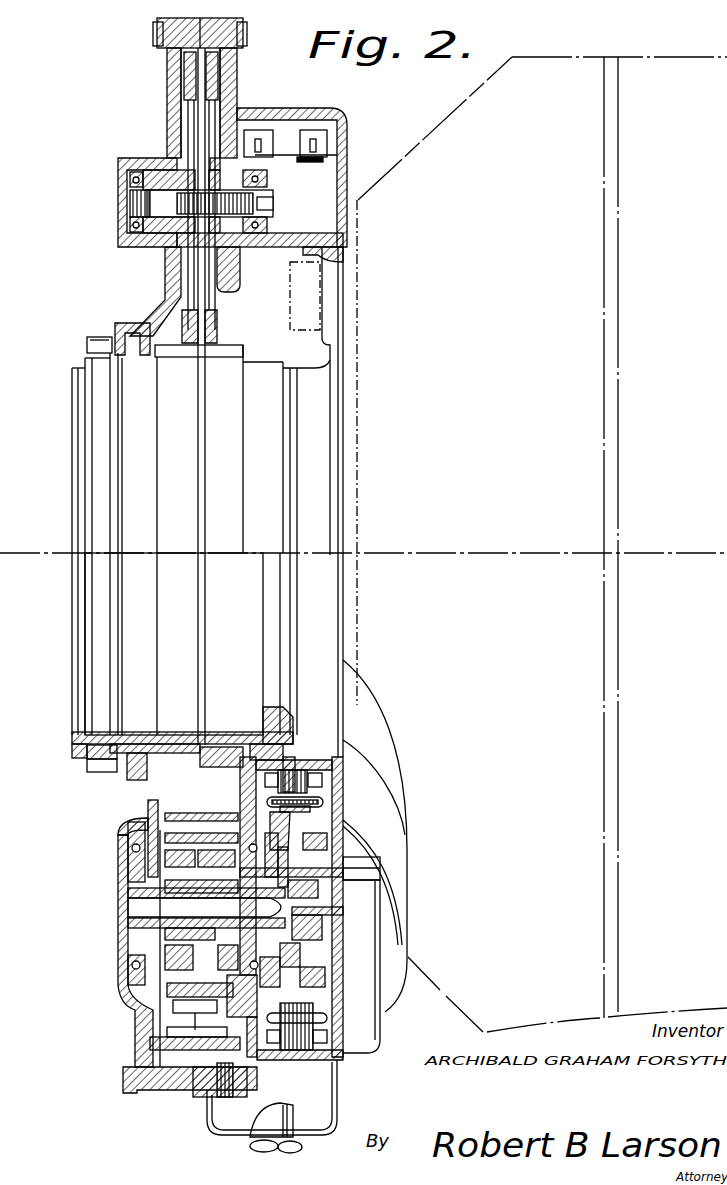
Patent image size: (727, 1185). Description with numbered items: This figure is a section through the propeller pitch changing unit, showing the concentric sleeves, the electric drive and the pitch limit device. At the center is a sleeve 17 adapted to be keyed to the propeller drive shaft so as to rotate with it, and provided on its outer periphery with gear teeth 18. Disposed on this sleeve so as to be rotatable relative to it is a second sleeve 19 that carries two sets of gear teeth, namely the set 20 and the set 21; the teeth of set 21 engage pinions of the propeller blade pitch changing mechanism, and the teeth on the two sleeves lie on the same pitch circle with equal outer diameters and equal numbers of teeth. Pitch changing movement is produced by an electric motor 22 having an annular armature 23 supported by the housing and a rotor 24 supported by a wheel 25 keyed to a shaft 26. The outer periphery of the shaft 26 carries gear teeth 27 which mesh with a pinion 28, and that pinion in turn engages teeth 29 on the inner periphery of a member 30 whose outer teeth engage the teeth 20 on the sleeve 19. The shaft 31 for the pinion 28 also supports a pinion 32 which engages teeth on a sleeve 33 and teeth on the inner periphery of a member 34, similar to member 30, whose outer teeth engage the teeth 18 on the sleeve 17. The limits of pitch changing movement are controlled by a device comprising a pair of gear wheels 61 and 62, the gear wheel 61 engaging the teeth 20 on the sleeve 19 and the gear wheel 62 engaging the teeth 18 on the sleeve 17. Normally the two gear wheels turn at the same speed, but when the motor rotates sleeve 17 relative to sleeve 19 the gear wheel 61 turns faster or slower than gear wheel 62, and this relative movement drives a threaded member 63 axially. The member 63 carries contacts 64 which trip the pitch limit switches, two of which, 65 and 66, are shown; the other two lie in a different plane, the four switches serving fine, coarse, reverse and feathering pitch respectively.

The sleeve 17 is at (270, 712).
The gear teeth 18 is at (236, 352).
The second sleeve 19 is at (150, 740).
The set of gear teeth 20 is at (172, 358).
The set of gear teeth 21 is at (100, 768).
The electric motor 22 is at (330, 998).
The armature 23 is at (343, 775).
The rotor 24 is at (343, 808).
The wheel 25 is at (330, 980).
The shaft 26 is at (343, 910).
The gear teeth 27 is at (178, 940).
The pinion 28 is at (125, 845).
The teeth 29 is at (150, 793).
The member 30 is at (132, 778).
The shaft 31 is at (180, 847).
The pinion 32 is at (216, 847).
The sleeve 33 is at (204, 910).
The member 34 is at (291, 758).
The gear wheel 61 is at (150, 327).
The gear wheel 62 is at (212, 340).
The member 63 is at (273, 204).
The contacts 64 is at (268, 176).
The pitch limit switch 65 is at (268, 130).
The pitch limit switch 66 is at (342, 120).